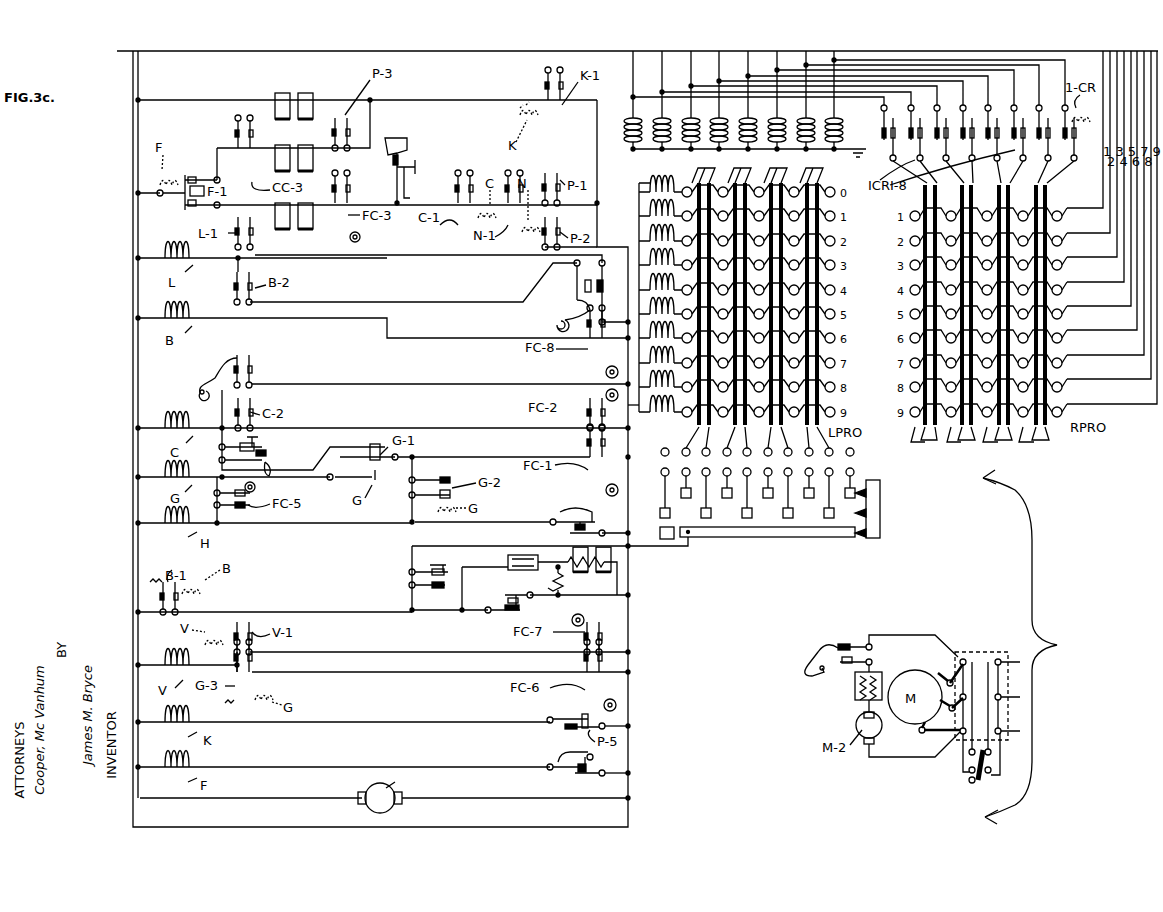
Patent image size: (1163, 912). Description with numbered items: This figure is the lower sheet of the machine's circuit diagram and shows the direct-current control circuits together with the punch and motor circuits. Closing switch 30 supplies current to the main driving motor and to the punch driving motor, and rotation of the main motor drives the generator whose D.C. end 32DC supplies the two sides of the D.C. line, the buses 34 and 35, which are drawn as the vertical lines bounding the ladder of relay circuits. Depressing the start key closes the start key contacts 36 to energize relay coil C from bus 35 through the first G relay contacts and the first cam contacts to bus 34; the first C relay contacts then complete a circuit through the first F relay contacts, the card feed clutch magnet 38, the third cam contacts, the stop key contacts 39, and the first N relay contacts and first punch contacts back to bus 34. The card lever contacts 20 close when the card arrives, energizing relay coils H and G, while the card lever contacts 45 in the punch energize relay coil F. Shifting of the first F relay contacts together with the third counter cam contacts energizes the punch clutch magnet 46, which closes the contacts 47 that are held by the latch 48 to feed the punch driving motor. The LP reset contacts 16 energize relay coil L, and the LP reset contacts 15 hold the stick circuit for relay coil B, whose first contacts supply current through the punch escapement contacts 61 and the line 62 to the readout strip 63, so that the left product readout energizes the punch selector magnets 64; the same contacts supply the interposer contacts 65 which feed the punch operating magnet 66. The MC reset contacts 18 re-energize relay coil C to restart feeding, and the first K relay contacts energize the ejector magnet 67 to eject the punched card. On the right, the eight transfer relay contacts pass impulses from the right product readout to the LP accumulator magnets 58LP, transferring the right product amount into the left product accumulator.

The D. C. line bus 34 is at (133, 345).
The D. C. line bus 35 is at (140, 82).
The ejector magnet 67 is at (272, 110).
The punch clutch magnet 46 is at (313, 158).
The card feed clutch magnet 38 is at (275, 232).
The stop key contacts 39 is at (392, 178).
The punch selector magnets 64 is at (662, 235).
The LP reset contacts 15 is at (582, 284).
The LP reset contacts 16 is at (598, 295).
The MC-1 reset contacts 18 is at (255, 370).
The start key contacts 36 is at (258, 448).
The readout strip 63 is at (668, 505).
The line 62 is at (445, 550).
The card lever contacts 20 is at (565, 536).
The punch escapement contacts 61 is at (428, 592).
The interposer contacts 65 is at (525, 606).
The punch operating magnet 66 is at (610, 588).
The card lever contacts 45 is at (560, 778).
The D. C. end of generator 32DC is at (396, 788).
The LP accumulator magnets 58LP is at (858, 110).
The contacts 47 is at (862, 645).
The latch 48 is at (820, 652).
The switch 30 is at (992, 760).